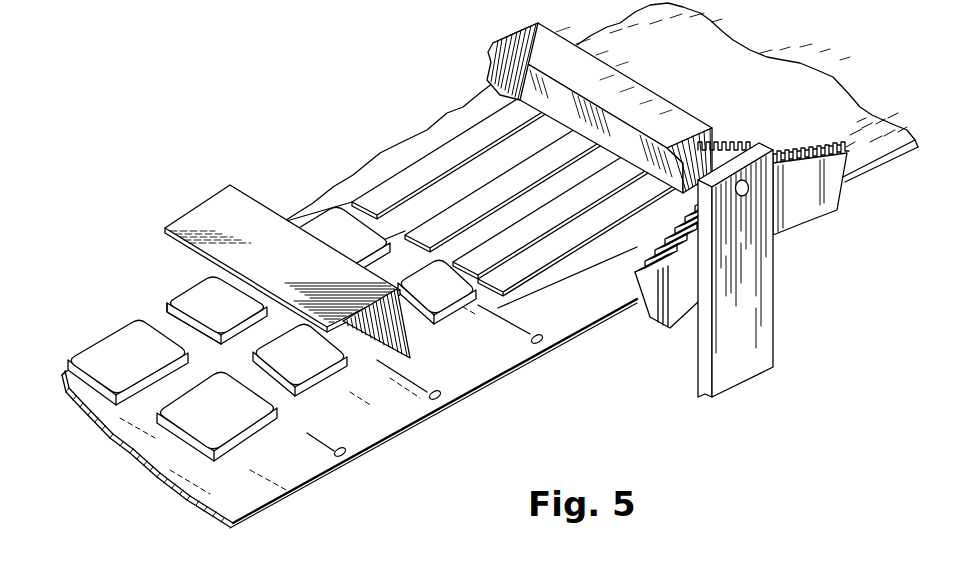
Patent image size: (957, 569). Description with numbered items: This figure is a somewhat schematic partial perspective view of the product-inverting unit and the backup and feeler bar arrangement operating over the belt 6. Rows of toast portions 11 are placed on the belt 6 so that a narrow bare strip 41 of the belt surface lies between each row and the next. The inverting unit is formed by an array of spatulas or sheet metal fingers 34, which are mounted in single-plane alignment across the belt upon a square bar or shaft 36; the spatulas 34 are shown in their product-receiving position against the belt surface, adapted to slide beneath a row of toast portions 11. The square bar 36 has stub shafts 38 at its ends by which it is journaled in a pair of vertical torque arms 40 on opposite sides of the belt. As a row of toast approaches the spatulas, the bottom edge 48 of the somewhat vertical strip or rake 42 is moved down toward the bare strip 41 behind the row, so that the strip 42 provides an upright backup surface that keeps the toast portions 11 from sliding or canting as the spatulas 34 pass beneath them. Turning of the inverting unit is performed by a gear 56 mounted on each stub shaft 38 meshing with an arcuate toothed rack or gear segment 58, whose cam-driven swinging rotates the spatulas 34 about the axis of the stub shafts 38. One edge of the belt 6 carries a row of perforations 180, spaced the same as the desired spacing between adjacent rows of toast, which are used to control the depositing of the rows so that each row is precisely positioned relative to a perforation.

The belt 6 is at (254, 500).
The toast portions 11 is at (114, 344).
The spatulas 34 is at (440, 147).
The square bar 36 is at (655, 105).
The stub shafts 38 is at (750, 186).
The torque arms 40 is at (757, 304).
The bare strip 41 is at (163, 318).
The strip or rake 42 is at (287, 270).
The bottom edge 48 is at (408, 360).
The gear 56 is at (733, 147).
The gear segment 58 is at (830, 187).
The perforations 180 is at (343, 458).